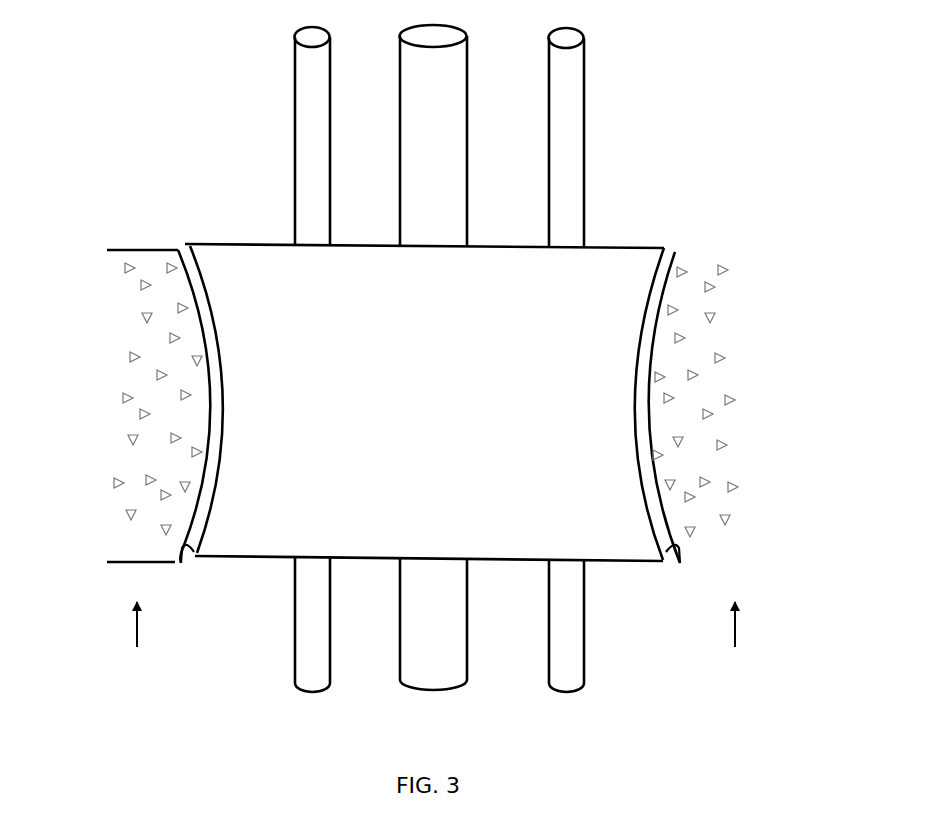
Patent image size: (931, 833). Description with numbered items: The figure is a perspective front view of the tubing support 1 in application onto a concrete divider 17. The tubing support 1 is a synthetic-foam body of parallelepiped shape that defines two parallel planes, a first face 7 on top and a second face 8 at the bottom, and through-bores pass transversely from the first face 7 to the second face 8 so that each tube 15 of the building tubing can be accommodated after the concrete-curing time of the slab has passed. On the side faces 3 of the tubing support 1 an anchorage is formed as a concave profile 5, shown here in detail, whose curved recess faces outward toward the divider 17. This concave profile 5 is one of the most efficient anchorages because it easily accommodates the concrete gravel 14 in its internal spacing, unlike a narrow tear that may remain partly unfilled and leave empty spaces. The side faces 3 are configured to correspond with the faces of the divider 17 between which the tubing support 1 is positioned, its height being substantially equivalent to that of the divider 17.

The tubing support 1 is at (632, 220).
The side faces 3 is at (186, 266).
The concave profile 5 is at (180, 564).
The first face 7 is at (253, 244).
The second face 8 is at (263, 557).
The concrete gravel 14 is at (150, 413).
The tube 15 is at (322, 78).
The divider 17 is at (433, 643).